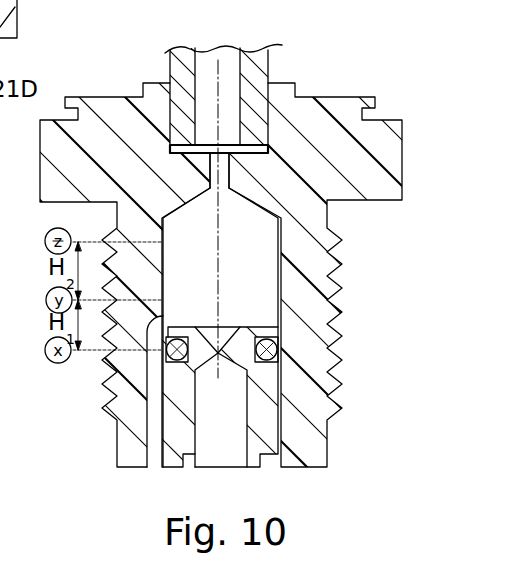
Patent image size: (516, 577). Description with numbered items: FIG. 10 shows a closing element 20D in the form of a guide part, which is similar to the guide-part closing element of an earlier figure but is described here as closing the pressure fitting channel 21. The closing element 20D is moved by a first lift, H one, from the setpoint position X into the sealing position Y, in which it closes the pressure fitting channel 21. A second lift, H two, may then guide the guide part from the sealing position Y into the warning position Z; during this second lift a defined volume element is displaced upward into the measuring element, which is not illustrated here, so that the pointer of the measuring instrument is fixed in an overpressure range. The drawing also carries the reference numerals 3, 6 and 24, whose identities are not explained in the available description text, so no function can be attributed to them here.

The valve insert body 3 is at (147, 482).
The drive insert 6 is at (172, 76).
The pressure fitting channel 21 is at (245, 262).
The connecting stem 24 is at (218, 179).
The closing element 20D is at (179, 419).